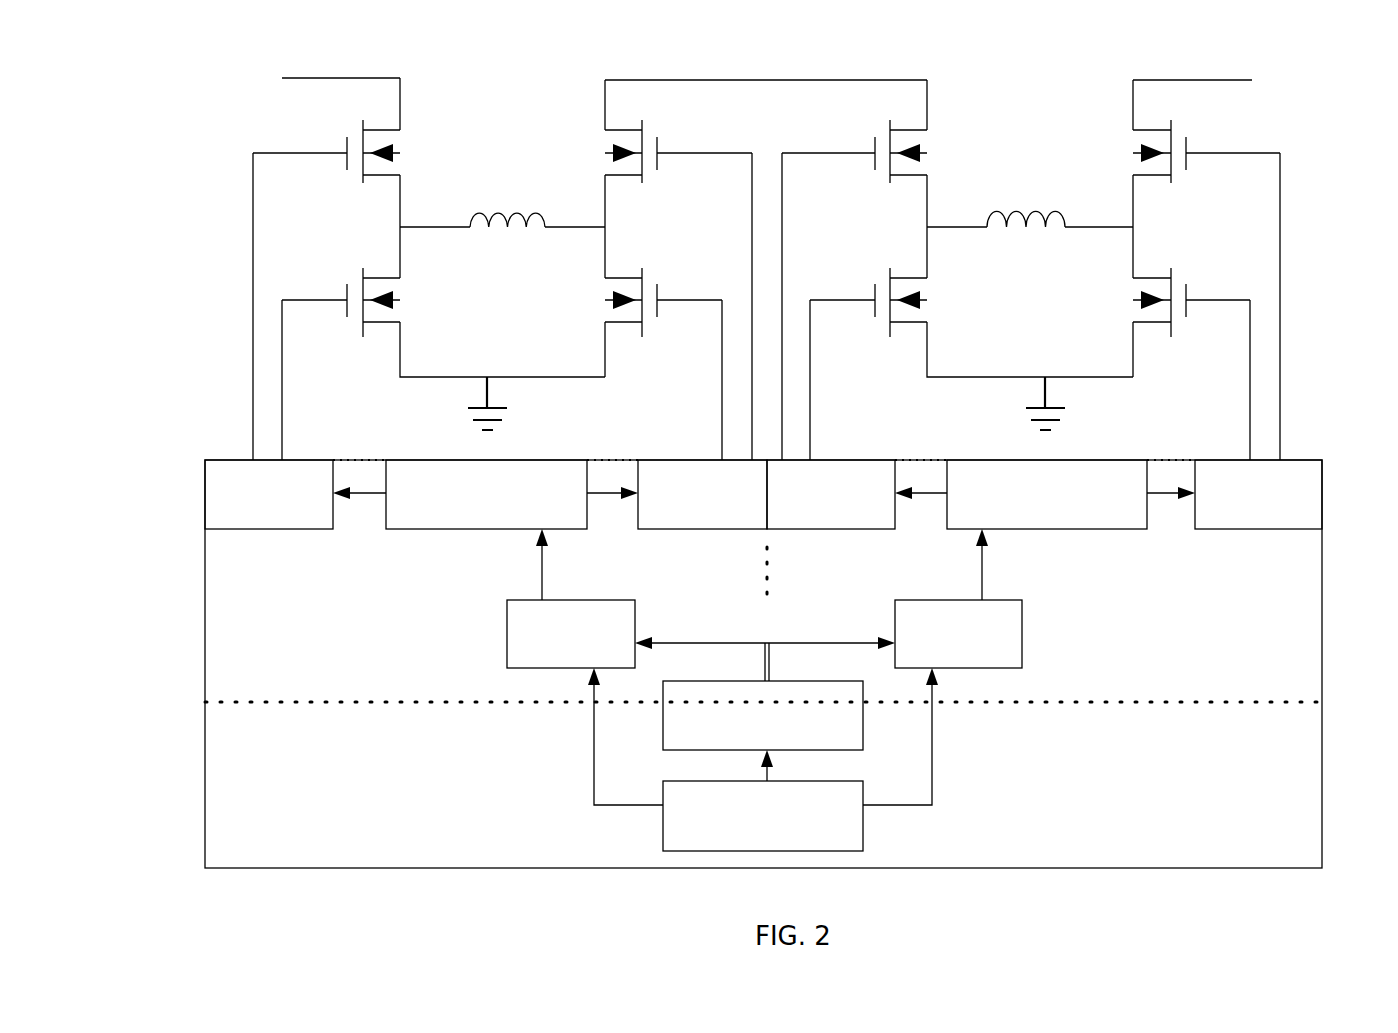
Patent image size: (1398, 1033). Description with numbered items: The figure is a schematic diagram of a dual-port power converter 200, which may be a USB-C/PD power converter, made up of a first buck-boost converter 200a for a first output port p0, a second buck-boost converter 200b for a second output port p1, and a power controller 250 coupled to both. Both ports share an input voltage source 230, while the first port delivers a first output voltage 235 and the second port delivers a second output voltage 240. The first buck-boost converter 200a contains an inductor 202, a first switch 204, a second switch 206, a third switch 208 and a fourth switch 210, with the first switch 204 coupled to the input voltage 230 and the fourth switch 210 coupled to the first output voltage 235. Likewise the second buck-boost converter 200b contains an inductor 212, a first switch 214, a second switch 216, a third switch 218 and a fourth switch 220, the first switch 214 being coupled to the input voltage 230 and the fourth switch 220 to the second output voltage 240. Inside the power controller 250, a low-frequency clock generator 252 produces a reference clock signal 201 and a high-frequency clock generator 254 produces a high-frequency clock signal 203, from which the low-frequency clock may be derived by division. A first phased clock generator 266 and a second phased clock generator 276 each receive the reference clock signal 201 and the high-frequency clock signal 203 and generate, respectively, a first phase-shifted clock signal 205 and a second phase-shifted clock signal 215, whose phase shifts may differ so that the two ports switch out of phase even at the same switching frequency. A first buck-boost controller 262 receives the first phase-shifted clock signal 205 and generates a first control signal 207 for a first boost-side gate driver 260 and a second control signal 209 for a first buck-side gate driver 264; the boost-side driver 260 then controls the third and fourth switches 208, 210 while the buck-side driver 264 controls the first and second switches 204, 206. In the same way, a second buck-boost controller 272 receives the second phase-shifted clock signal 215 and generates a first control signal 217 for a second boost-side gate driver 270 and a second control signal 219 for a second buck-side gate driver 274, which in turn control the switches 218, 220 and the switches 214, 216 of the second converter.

The dual-port power converter 200 is at (122, 88).
The first buck-boost converter 200a is at (209, 196).
The second buck-boost converter 200b is at (1339, 196).
The reference clock signal 201 is at (808, 643).
The inductor 202 is at (489, 206).
The high-frequency clock signal 203 is at (592, 728).
The first switch (HS1) 204 is at (650, 138).
The first phase-shifted clock signal 205 is at (539, 549).
The second switch (LS1) 206 is at (652, 285).
The first control signal 207 is at (377, 497).
The third switch (LS2) 208 is at (347, 285).
The second control signal 209 is at (617, 497).
The fourth switch (HS2) 210 is at (347, 138).
The inductor 212 is at (1014, 208).
The first switch (HS1) 214 is at (874, 138).
The second phase-shifted clock signal 215 is at (986, 549).
The second switch (LS1) 216 is at (873, 285).
The first control signal 217 is at (1158, 497).
The third switch (LS2) 218 is at (1180, 285).
The second control signal 219 is at (915, 497).
The fourth switch (HS2) 220 is at (1180, 138).
The input voltage source 230 is at (777, 80).
The first output voltage 235 is at (380, 78).
The second output voltage 240 is at (1148, 80).
The power controller 250 is at (763, 664).
The low-frequency clock generator 252 is at (664, 743).
The high-frequency clock generator 254 is at (666, 812).
The first boost-side gate driver 260 is at (296, 529).
The first buck-boost controller 262 is at (445, 529).
The first buck-side gate driver 264 is at (738, 529).
The first phased clock generator 266 is at (508, 643).
The second boost-side gate driver 270 is at (1233, 529).
The second buck-boost controller 272 is at (1087, 529).
The second buck-side gate driver 274 is at (792, 529).
The second phased clock generator 276 is at (1022, 643).